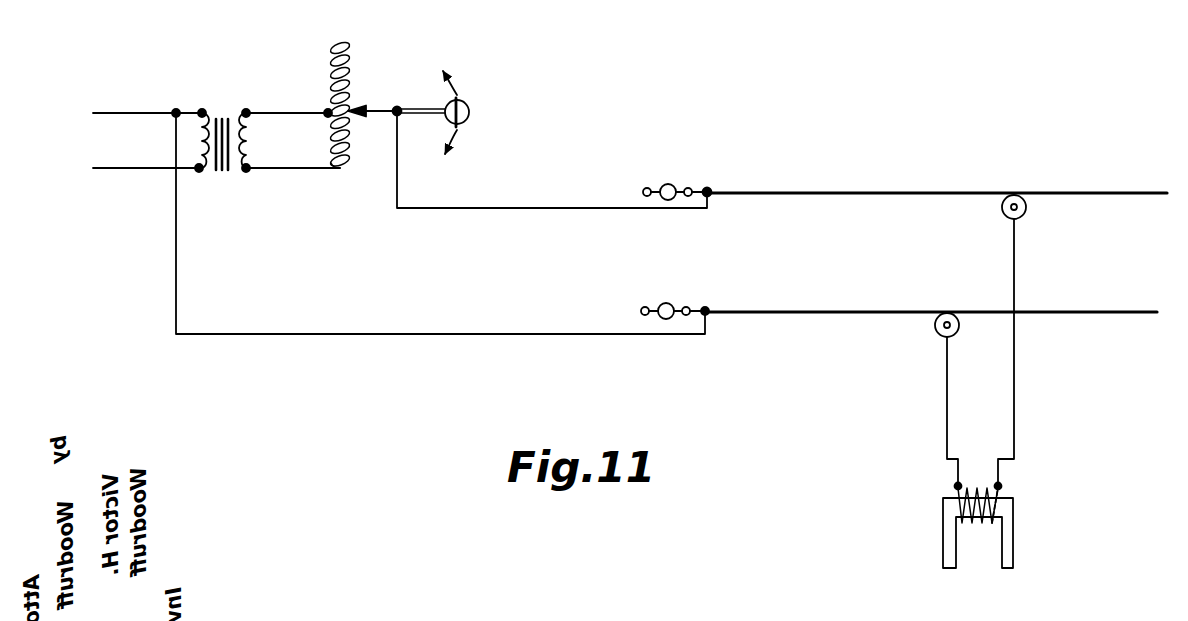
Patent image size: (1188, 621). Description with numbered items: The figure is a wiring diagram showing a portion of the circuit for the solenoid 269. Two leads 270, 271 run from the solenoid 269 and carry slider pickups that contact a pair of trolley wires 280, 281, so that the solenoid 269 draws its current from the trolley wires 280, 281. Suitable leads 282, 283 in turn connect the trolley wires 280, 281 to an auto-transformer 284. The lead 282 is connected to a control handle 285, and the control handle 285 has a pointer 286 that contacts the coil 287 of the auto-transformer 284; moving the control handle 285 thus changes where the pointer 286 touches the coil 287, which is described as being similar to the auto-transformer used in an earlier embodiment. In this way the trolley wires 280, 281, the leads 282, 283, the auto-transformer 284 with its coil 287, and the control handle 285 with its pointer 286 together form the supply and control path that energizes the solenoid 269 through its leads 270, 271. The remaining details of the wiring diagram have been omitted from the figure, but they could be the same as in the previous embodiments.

The solenoid 269 is at (1011, 494).
The lead 270 is at (1014, 413).
The lead 271 is at (947, 418).
The trolley wire 280 is at (883, 191).
The trolley wire 281 is at (841, 310).
The lead 282 is at (552, 191).
The lead 283 is at (535, 316).
The auto-transformer 284 is at (331, 94).
The control handle 285 is at (466, 103).
The pointer 286 is at (353, 110).
The coil 287 is at (352, 136).